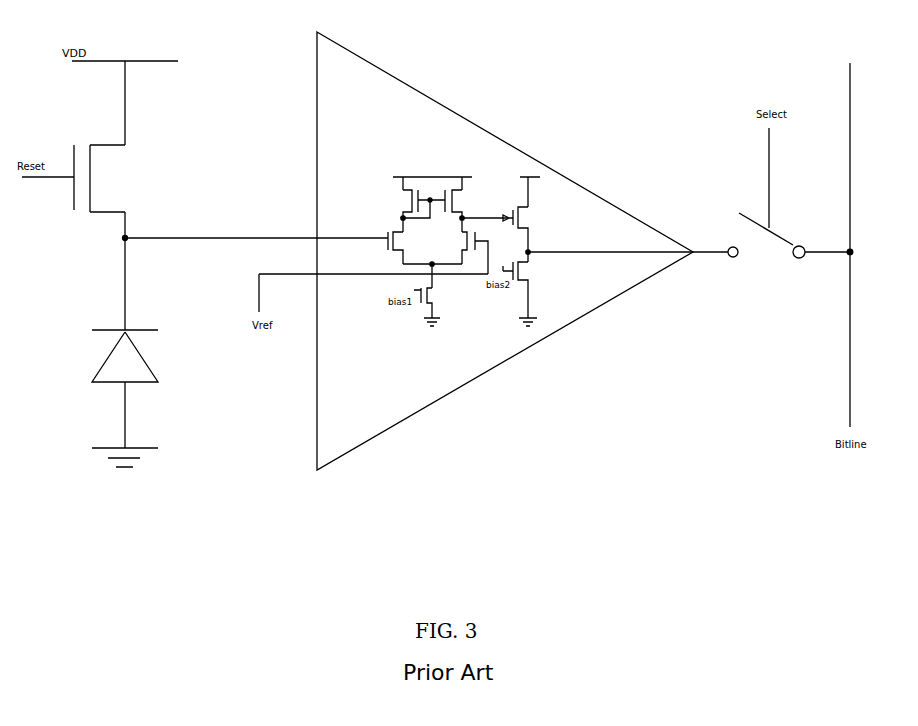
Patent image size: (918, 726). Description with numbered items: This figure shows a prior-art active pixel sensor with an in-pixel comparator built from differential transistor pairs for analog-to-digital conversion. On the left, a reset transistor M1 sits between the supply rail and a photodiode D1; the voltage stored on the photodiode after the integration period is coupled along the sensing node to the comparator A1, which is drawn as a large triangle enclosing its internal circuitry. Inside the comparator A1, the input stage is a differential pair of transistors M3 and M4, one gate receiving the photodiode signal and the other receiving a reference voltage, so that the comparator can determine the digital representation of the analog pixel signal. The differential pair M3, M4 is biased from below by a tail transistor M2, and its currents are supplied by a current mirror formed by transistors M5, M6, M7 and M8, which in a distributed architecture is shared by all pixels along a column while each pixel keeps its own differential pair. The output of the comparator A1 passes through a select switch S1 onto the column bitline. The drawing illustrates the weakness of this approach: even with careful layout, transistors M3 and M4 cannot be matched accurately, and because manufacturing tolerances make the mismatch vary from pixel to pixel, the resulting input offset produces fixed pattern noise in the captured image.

The reset transistor M1 is at (99, 191).
The photodiode D1 is at (135, 352).
The comparator A1 is at (475, 378).
The tail current transistor M2 is at (430, 295).
The differential pair transistor M3 is at (401, 241).
The differential pair transistor M4 is at (467, 246).
The current mirror transistor M5 is at (410, 197).
The current mirror transistor M6 is at (453, 197).
The current mirror transistor M7 is at (523, 214).
The current mirror transistor M8 is at (524, 289).
The select switch S1 is at (794, 203).